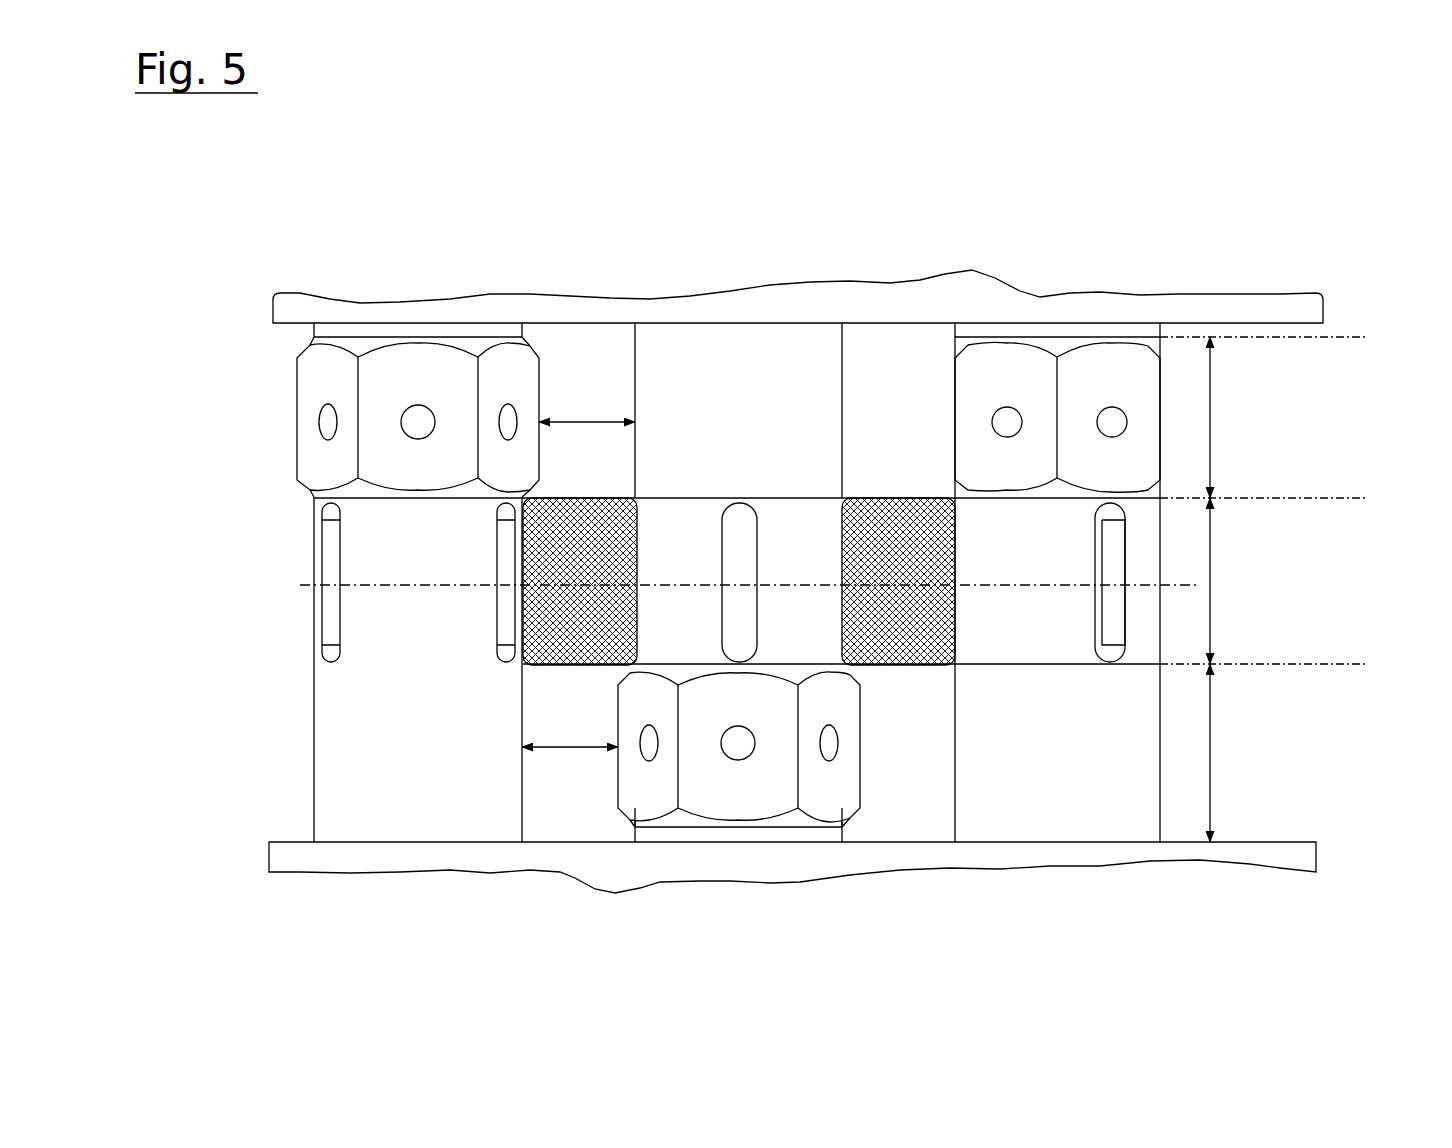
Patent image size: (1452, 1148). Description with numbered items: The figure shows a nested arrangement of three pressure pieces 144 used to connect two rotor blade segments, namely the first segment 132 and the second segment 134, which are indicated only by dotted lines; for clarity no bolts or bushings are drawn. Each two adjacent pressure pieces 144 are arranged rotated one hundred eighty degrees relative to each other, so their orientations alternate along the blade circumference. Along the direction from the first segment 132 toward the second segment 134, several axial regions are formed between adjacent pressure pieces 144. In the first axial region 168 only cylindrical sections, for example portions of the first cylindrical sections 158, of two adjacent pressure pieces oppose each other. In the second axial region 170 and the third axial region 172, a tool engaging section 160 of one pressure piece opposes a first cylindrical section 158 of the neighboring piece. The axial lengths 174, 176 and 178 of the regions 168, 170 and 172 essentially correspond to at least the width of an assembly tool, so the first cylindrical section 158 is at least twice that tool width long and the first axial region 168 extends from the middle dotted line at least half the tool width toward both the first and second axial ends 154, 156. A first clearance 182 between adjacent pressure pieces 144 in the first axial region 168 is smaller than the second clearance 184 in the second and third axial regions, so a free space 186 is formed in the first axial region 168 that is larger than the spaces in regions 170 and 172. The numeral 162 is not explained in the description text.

The first segment 132 is at (1283, 850).
The second segment 134 is at (1220, 306).
The pressure piece 144 is at (772, 366).
The first axial end 154 is at (748, 322).
The second axial end 156 is at (430, 335).
The first cylindrical section 158 is at (698, 425).
The tool engaging section 160 is at (977, 425).
The cross member 162 is at (306, 330).
The first axial region 168 is at (1340, 500).
The second axial region 170 is at (1340, 665).
The third axial region 172 is at (1340, 337).
The axial length of first axial region 174 is at (1216, 580).
The axial length of second axial region 176 is at (1216, 762).
The axial length of third axial region 178 is at (1216, 418).
The first clearance 182 is at (637, 557).
The second clearance 184 is at (585, 420).
The free space 186 is at (886, 497).